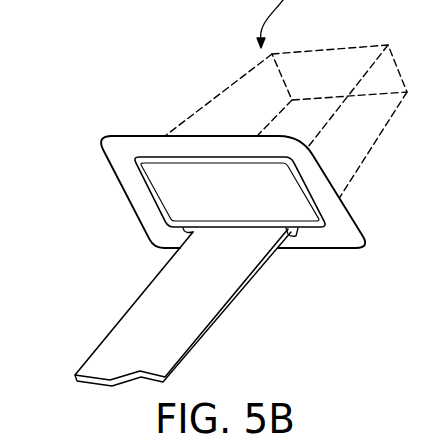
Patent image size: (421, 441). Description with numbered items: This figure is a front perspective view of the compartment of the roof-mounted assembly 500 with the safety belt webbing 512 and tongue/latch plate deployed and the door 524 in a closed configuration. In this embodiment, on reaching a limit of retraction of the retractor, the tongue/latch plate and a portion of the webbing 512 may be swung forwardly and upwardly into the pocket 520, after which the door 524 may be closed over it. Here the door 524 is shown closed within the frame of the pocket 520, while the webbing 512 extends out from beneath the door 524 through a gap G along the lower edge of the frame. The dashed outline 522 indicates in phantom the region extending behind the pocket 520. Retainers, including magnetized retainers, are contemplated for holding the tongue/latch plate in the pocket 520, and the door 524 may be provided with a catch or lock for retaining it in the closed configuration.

The roof-mounted assembly 500 is at (400, 429).
The webbing 512 is at (138, 320).
The pocket 520 is at (167, 232).
The receptacle outline (phantom) 522 is at (218, 92).
The door 524 is at (243, 198).
The gap / slot G is at (295, 246).